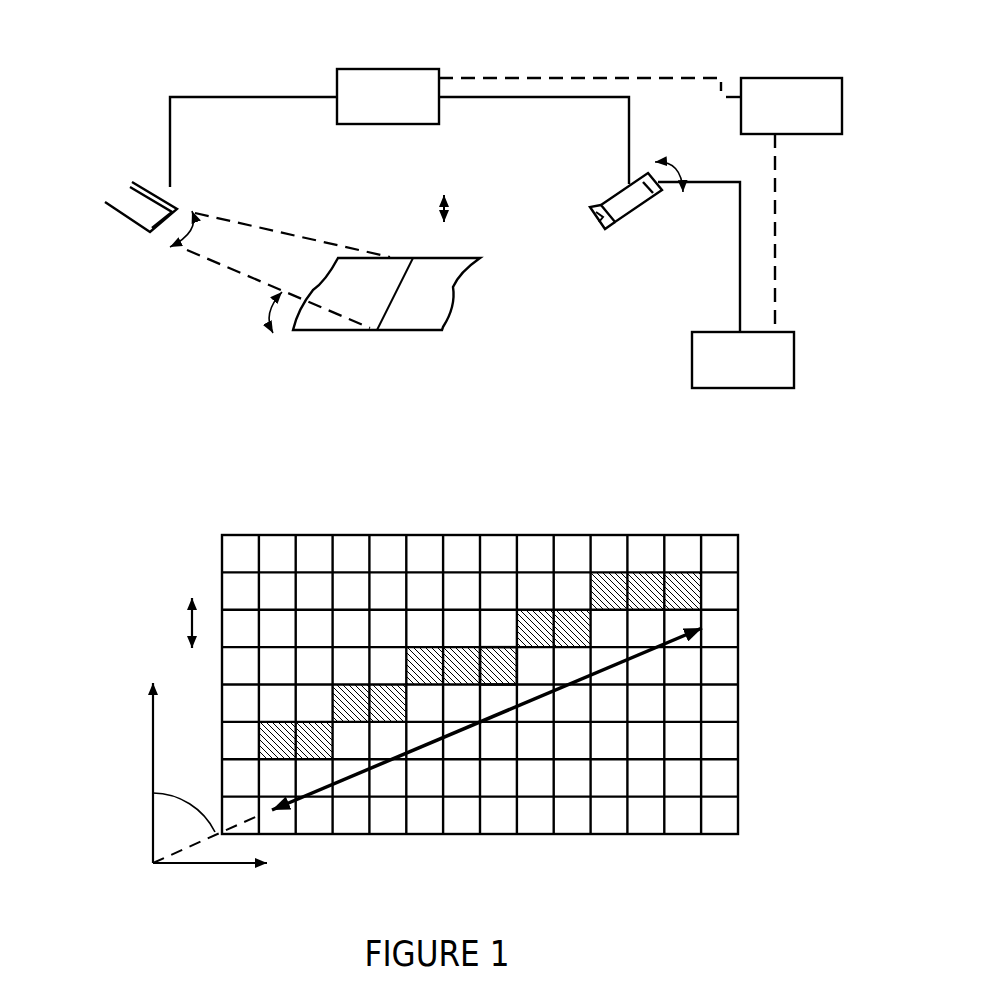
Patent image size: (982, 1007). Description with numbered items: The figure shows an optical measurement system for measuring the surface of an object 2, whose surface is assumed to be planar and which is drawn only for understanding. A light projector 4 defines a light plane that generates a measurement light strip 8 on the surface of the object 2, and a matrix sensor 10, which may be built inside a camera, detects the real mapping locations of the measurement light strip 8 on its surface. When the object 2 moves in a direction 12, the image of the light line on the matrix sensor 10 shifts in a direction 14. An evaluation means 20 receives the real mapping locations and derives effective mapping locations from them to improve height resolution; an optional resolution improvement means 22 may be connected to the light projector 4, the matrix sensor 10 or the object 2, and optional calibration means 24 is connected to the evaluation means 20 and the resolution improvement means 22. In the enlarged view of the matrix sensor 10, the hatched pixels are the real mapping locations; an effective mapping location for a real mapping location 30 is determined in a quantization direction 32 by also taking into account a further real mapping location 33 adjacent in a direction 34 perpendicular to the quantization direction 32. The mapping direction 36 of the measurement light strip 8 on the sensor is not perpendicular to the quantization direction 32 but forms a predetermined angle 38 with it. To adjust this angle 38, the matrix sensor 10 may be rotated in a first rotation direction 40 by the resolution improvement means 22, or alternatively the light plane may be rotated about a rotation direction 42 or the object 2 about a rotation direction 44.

The object 2 is at (395, 294).
The light projector 4 is at (133, 212).
The measurement light strip 8 is at (377, 331).
The matrix sensor 10 is at (652, 198).
The direction 12 is at (447, 209).
The direction 14 is at (189, 622).
The evaluation means 20 is at (794, 352).
The resolution improvement means 22 is at (416, 69).
The calibration means 24 is at (792, 78).
The real mapping location 30 is at (457, 650).
The quantization direction 32 is at (152, 746).
The further real mapping location 33 is at (500, 680).
The direction perpendicular to the quantization direction 34 is at (217, 866).
The mapping direction 36 is at (720, 621).
The angle 38 is at (168, 827).
The first rotation direction 40 is at (677, 165).
The rotation direction 42 is at (183, 250).
The rotation direction 44 is at (267, 322).